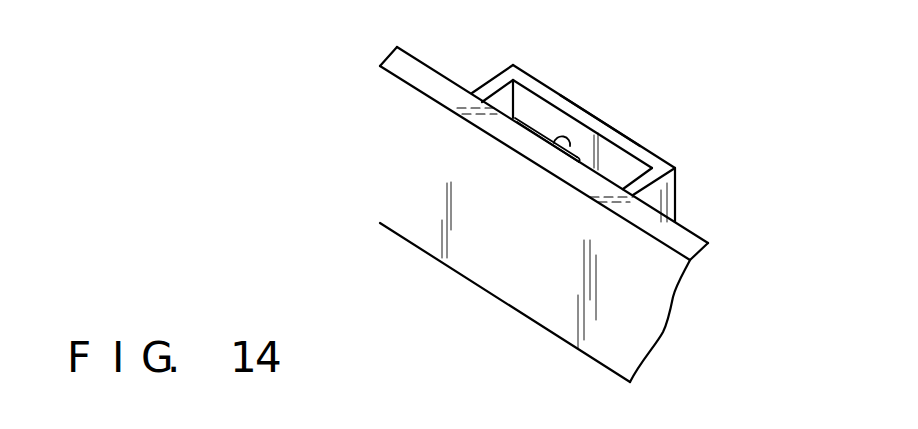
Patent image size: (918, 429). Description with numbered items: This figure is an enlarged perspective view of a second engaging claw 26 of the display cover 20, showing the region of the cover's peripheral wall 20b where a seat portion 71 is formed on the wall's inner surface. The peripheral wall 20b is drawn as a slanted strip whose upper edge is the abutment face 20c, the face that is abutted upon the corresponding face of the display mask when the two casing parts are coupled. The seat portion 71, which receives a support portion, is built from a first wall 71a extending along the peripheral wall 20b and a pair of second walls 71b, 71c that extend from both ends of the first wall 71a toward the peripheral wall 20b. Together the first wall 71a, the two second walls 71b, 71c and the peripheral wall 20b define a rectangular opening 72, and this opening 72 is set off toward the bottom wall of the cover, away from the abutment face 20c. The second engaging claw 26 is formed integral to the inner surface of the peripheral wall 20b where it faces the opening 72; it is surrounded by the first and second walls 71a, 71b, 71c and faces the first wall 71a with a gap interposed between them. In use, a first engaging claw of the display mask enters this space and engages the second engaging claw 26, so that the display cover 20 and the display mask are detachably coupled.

The display cover 20 is at (571, 214).
The peripheral wall 20b is at (653, 303).
The abutment face 20c is at (445, 98).
The second engaging claw 26 is at (567, 139).
The seat portion 71 is at (583, 120).
The first wall 71a is at (581, 118).
The second wall 71b is at (487, 89).
The second wall 71c is at (670, 187).
The rectangular opening 72 is at (533, 102).